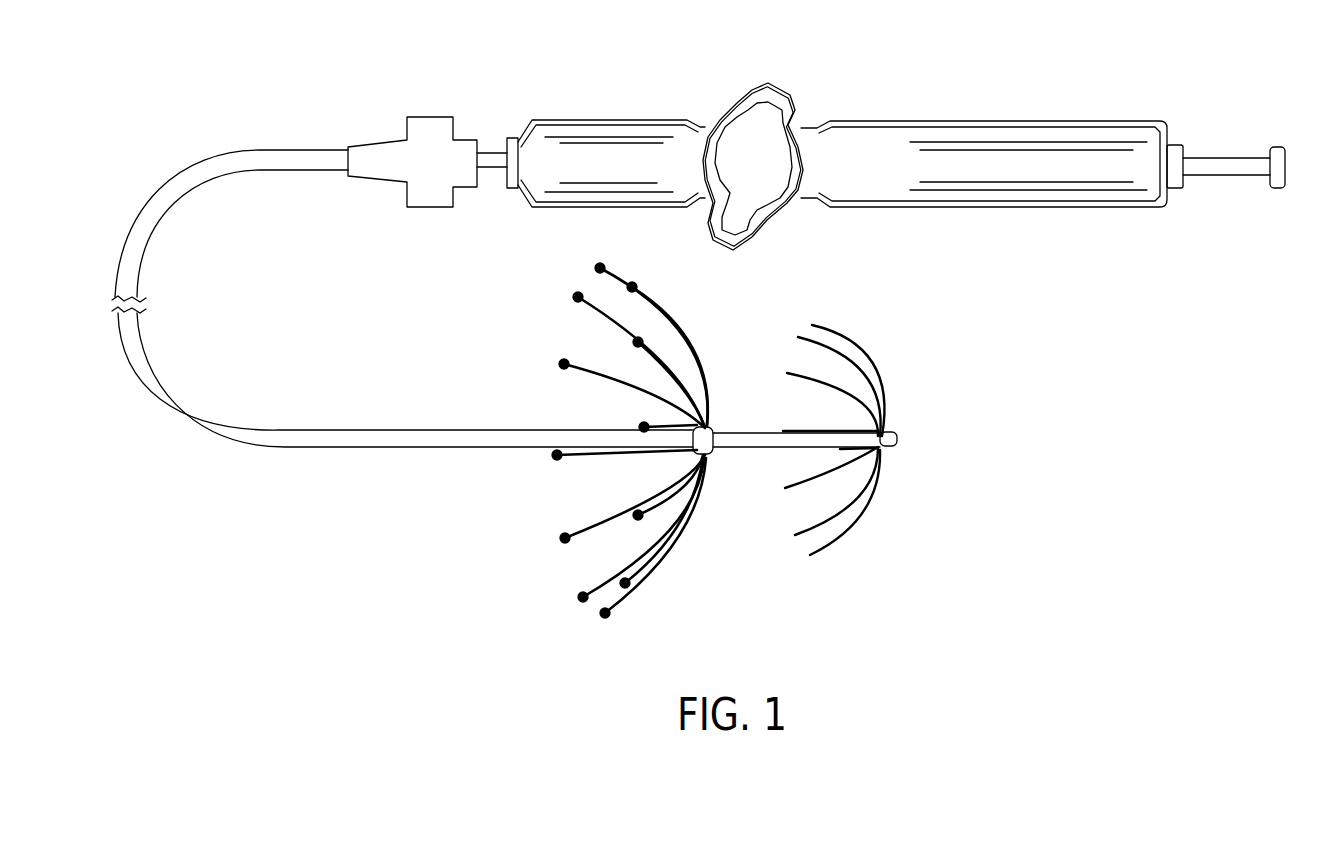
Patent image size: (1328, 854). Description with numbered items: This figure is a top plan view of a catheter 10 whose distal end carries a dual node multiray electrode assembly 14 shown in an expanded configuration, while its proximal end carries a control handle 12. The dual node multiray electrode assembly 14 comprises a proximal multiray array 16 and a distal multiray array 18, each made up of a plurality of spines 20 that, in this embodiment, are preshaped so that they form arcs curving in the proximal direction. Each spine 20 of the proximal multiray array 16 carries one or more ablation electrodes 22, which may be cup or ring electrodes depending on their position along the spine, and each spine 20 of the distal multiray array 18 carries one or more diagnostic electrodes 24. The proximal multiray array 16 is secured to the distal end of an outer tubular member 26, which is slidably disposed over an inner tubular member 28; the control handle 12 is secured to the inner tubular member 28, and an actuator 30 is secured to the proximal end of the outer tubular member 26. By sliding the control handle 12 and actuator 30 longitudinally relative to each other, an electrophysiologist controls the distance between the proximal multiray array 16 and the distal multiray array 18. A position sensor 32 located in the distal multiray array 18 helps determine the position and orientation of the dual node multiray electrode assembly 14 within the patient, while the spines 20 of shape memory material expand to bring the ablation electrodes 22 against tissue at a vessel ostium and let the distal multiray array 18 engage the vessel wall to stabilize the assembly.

The catheter 10 is at (398, 60).
The control handle 12 is at (900, 208).
The dual node multiray electrode assembly 14 is at (745, 612).
The proximal multiray array 16 is at (580, 618).
The distal multiray array 18 is at (862, 580).
The spine 20 is at (600, 380).
The ablation electrode 22 is at (565, 535).
The diagnostic electrode 24 is at (803, 380).
The outer tubular member 26 is at (407, 452).
The inner tubular member 28 is at (483, 172).
The actuator 30 is at (425, 208).
The sensor 32 is at (888, 434).